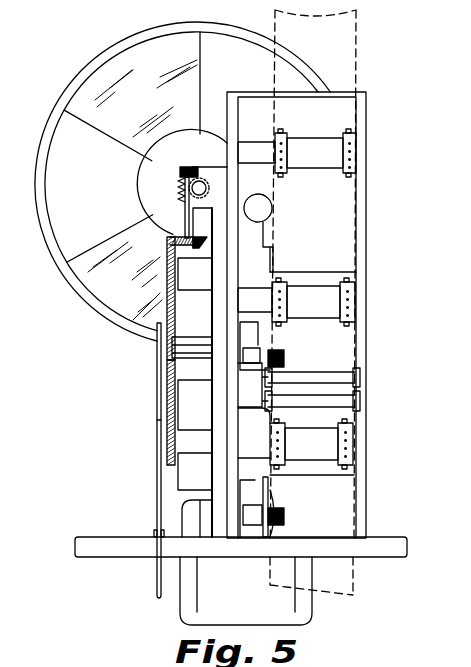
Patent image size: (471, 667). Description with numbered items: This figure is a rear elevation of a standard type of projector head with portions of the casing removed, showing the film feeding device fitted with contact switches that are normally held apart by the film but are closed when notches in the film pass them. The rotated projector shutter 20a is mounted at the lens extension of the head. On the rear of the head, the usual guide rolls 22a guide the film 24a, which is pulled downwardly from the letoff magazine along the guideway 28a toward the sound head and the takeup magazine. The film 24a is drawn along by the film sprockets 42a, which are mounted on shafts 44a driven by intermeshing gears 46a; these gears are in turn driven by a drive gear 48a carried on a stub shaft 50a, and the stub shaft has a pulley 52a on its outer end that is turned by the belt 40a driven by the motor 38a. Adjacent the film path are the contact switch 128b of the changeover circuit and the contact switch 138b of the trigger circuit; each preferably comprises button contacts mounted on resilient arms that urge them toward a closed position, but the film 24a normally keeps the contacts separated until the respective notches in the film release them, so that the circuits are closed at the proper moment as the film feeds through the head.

The projector shutter 20a is at (55, 117).
The film 24a is at (354, 54).
The guideway 28a is at (366, 494).
The film sprockets 42a is at (353, 152).
The guide rolls 22a is at (358, 382).
The contact switch 128b is at (276, 355).
The contact switch 138b is at (280, 518).
The motor 38a is at (305, 610).
The belt 40a is at (157, 483).
The shafts 44a is at (177, 300).
The intermeshing gears 46a is at (170, 262).
The drive gear 48a is at (172, 358).
The stub shaft 50a is at (174, 372).
The pulley 52a is at (160, 400).